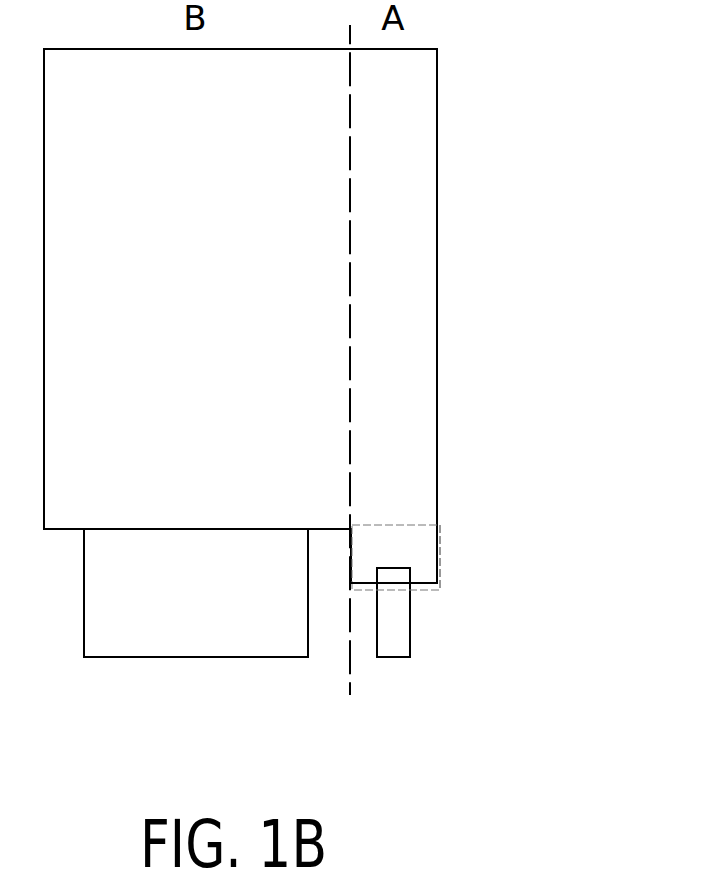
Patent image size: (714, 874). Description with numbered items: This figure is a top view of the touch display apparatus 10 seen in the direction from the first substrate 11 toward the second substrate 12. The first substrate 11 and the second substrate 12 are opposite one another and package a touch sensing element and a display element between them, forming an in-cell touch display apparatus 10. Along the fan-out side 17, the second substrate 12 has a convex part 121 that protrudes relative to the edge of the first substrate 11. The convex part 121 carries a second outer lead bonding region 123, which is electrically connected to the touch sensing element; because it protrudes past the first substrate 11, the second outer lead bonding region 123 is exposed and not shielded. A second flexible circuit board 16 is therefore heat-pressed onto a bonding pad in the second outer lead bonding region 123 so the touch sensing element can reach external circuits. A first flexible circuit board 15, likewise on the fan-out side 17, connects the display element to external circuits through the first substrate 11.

The touch display apparatus 10 is at (311, 405).
The first substrate 11 is at (392, 183).
The second substrate 12 is at (423, 548).
The convex part 121 is at (406, 565).
The second outer lead bonding region 123 is at (443, 547).
The first flexible circuit board 15 is at (207, 633).
The second flexible circuit board 16 is at (393, 640).
The fan-out side 17 is at (468, 588).